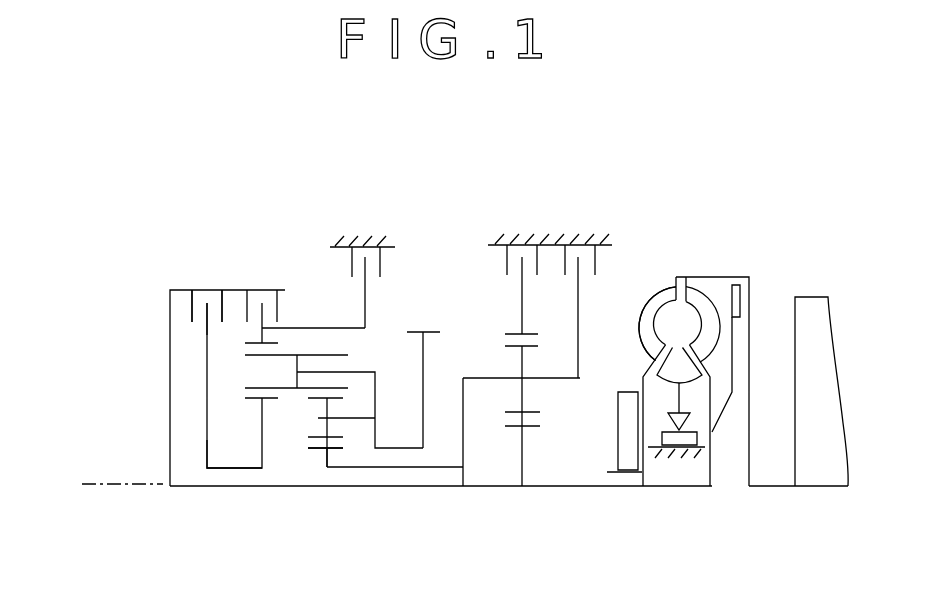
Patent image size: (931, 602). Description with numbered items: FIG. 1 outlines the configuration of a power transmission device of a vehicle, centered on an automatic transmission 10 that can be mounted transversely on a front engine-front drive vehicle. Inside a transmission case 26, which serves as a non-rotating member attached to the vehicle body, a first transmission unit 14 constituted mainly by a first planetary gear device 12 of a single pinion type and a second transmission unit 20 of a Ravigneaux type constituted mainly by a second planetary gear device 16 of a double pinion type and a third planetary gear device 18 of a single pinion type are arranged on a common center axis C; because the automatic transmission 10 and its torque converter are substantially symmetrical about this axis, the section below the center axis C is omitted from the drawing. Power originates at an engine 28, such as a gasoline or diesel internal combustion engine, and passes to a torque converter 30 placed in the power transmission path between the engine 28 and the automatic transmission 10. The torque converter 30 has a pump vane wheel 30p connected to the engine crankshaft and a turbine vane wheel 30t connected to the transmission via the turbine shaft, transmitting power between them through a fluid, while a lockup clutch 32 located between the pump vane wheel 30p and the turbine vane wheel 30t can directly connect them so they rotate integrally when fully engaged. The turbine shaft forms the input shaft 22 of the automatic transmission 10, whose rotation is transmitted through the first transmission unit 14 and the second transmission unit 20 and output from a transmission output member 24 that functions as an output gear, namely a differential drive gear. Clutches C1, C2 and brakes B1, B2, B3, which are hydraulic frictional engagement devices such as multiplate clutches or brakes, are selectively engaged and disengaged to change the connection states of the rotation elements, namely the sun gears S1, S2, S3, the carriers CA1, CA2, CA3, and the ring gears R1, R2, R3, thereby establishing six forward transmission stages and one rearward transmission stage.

The automatic transmission 10 is at (302, 198).
The first planetary gear device 12 is at (522, 502).
The first transmission unit 14 is at (603, 500).
The second planetary gear device 16 is at (327, 498).
The third planetary gear device 18 is at (267, 497).
The second transmission unit 20 is at (223, 500).
The input shaft 22 is at (747, 396).
The transmission output member 24 is at (435, 330).
The transmission case 26 is at (368, 240).
The engine 28 is at (817, 478).
The torque converter 30 is at (665, 325).
The pump vane wheel 30p is at (641, 332).
The turbine vane wheel 30t is at (690, 290).
The lockup clutch 32 is at (740, 300).
The center axis C is at (110, 486).
The clutch C1 is at (205, 297).
The clutch C2 is at (261, 301).
The brake B1 is at (597, 311).
The brake B2 is at (385, 287).
The brake B3 is at (503, 289).
The sun gear S1 is at (528, 428).
The sun gear S2 is at (318, 449).
The sun gear S3 is at (242, 399).
The ring gear R1 is at (515, 330).
The ring gear R2 is at (255, 341).
The ring gear R3 is at (168, 388).
The carrier CA1 is at (543, 380).
The carrier CA2 is at (354, 360).
The carrier CA3 is at (347, 444).